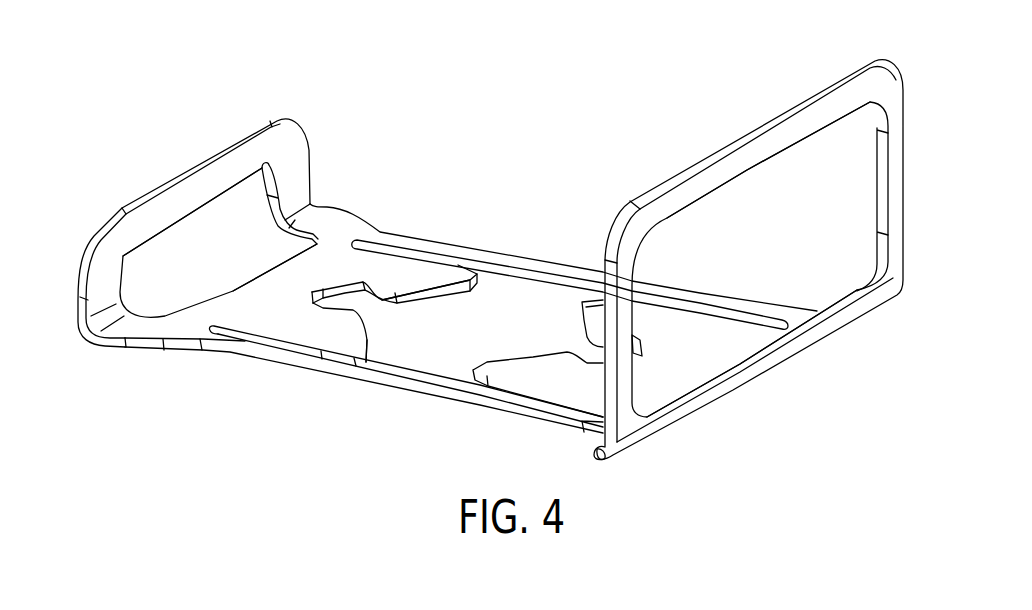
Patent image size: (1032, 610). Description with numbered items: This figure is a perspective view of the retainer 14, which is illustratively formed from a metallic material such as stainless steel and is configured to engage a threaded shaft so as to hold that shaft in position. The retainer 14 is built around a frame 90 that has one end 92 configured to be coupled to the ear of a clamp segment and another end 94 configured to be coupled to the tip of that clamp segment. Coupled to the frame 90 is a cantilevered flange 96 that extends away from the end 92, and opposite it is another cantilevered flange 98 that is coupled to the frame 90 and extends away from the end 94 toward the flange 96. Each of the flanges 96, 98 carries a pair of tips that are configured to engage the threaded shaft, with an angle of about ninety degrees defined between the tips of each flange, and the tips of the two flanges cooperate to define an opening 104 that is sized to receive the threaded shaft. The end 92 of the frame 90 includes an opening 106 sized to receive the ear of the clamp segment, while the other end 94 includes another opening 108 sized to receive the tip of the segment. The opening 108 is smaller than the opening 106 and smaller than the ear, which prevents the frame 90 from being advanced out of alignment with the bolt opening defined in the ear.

The retainer 14 is at (126, 126).
The frame 90 is at (381, 384).
The end 92 is at (896, 88).
The end 94 is at (102, 247).
The cantilevered flange 96 is at (537, 376).
The cantilevered flange 98 is at (446, 271).
The opening 104 is at (527, 294).
The opening 106 is at (830, 156).
The opening 108 is at (246, 233).